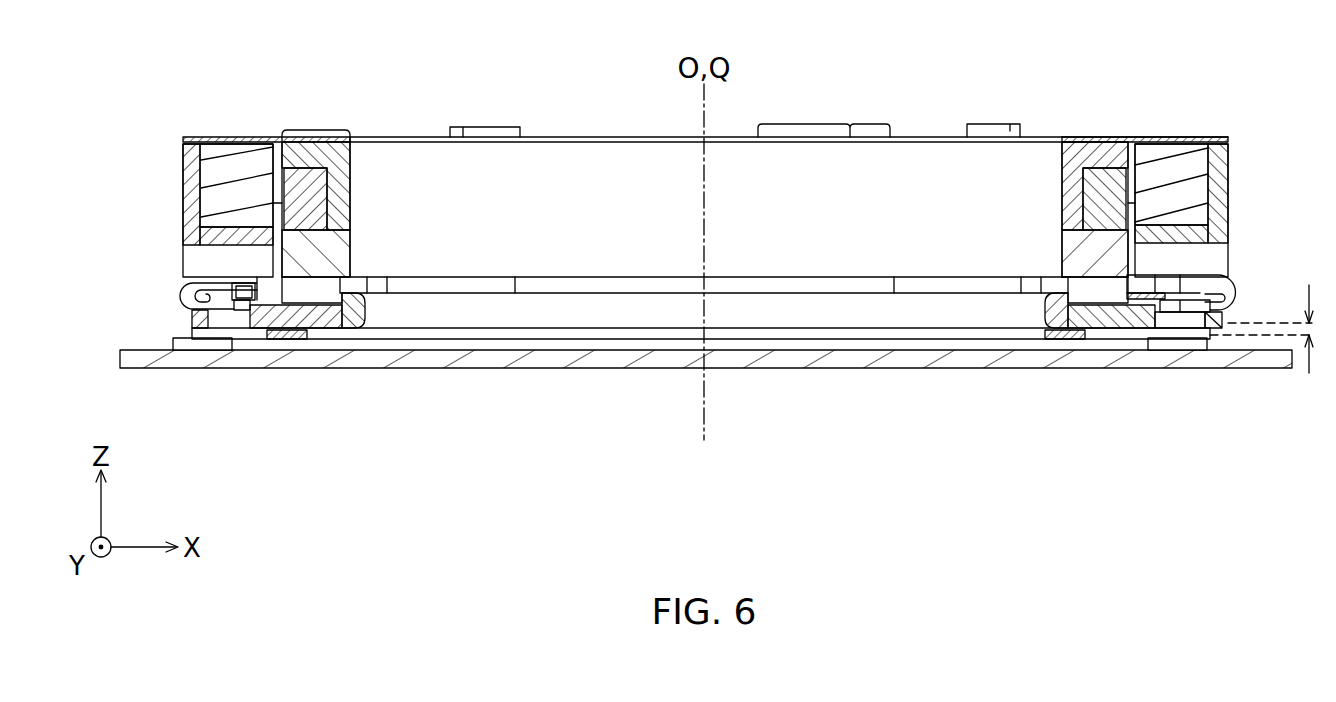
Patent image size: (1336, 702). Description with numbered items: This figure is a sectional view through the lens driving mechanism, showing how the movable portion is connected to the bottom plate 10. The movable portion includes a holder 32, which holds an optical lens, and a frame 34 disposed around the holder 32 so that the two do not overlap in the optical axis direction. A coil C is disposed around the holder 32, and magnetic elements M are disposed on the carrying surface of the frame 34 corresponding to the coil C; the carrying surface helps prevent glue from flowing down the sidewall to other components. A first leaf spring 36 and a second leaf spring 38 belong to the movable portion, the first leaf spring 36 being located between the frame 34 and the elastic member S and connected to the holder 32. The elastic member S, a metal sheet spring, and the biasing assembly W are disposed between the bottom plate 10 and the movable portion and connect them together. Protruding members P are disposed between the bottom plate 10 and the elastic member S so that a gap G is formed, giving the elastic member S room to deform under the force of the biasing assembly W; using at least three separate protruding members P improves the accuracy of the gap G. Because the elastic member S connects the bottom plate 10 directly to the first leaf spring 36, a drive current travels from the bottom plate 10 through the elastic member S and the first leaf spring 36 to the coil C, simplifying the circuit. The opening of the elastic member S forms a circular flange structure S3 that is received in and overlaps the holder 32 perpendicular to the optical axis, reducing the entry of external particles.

The bottom plate 10 is at (1226, 362).
The holder 32 is at (330, 160).
The frame 34 is at (188, 186).
The first leaf spring 36 is at (241, 304).
The second leaf spring 38 is at (1210, 140).
The magnetic elements M is at (236, 185).
The coil C is at (297, 185).
The biasing assembly W is at (188, 305).
The elastic member S is at (320, 320).
The flange structure S3 is at (357, 310).
The protruding members P is at (287, 340).
The gap G is at (1273, 329).